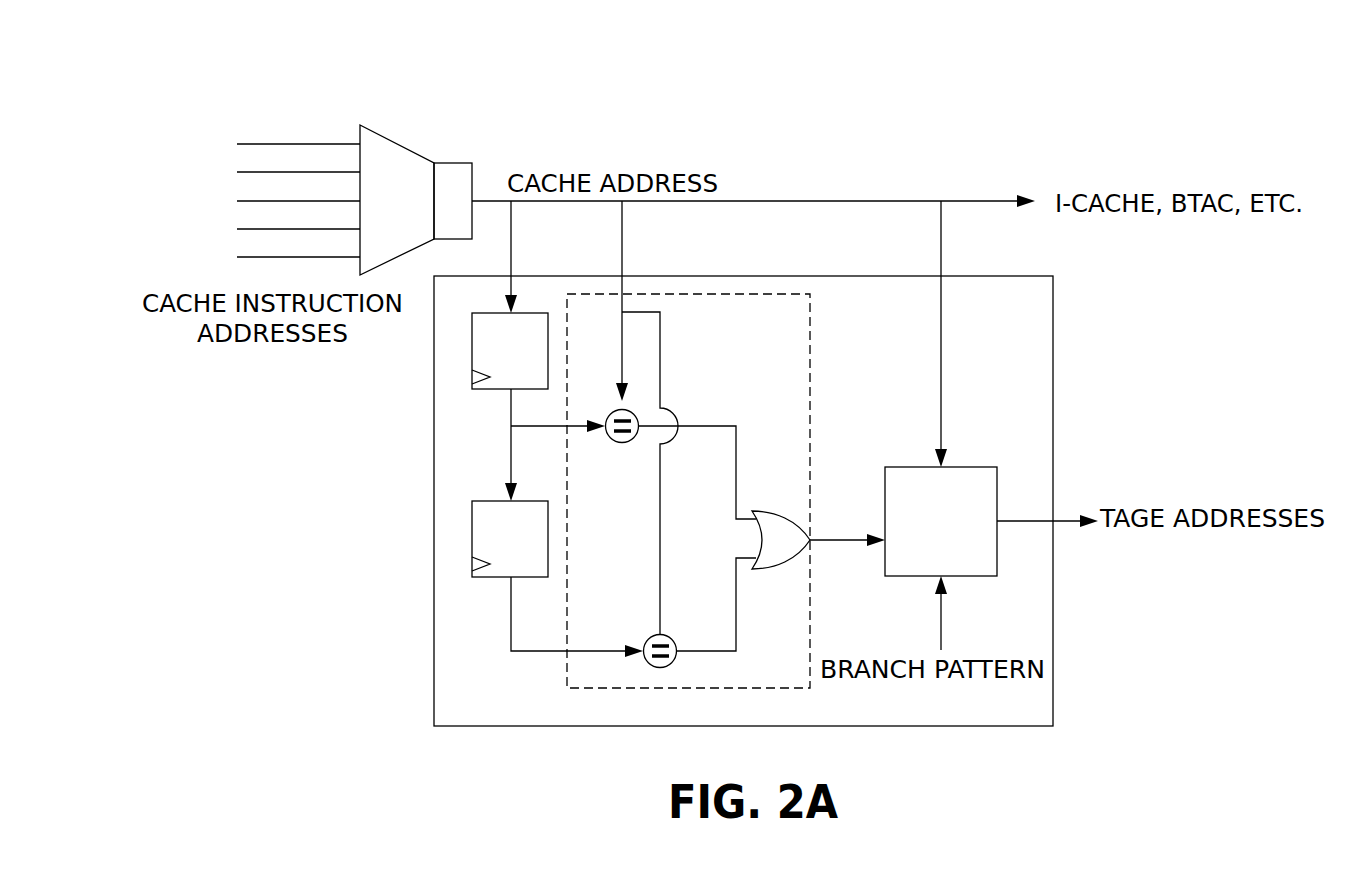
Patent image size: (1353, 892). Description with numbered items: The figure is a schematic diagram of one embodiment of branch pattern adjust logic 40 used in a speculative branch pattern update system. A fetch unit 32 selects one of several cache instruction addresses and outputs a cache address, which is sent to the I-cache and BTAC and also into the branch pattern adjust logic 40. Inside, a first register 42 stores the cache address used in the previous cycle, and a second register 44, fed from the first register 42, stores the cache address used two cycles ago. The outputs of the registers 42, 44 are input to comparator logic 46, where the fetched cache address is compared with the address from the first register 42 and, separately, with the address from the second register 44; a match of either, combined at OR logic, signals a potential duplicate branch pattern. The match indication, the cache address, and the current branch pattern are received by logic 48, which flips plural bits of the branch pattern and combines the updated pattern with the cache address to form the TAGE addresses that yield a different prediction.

The fetch unit 32 is at (434, 129).
The branch pattern adjust logic 40 is at (1053, 348).
The first register 42 is at (496, 366).
The second register 44 is at (496, 551).
The comparator logic 46 is at (785, 326).
The logic 48 is at (928, 518).